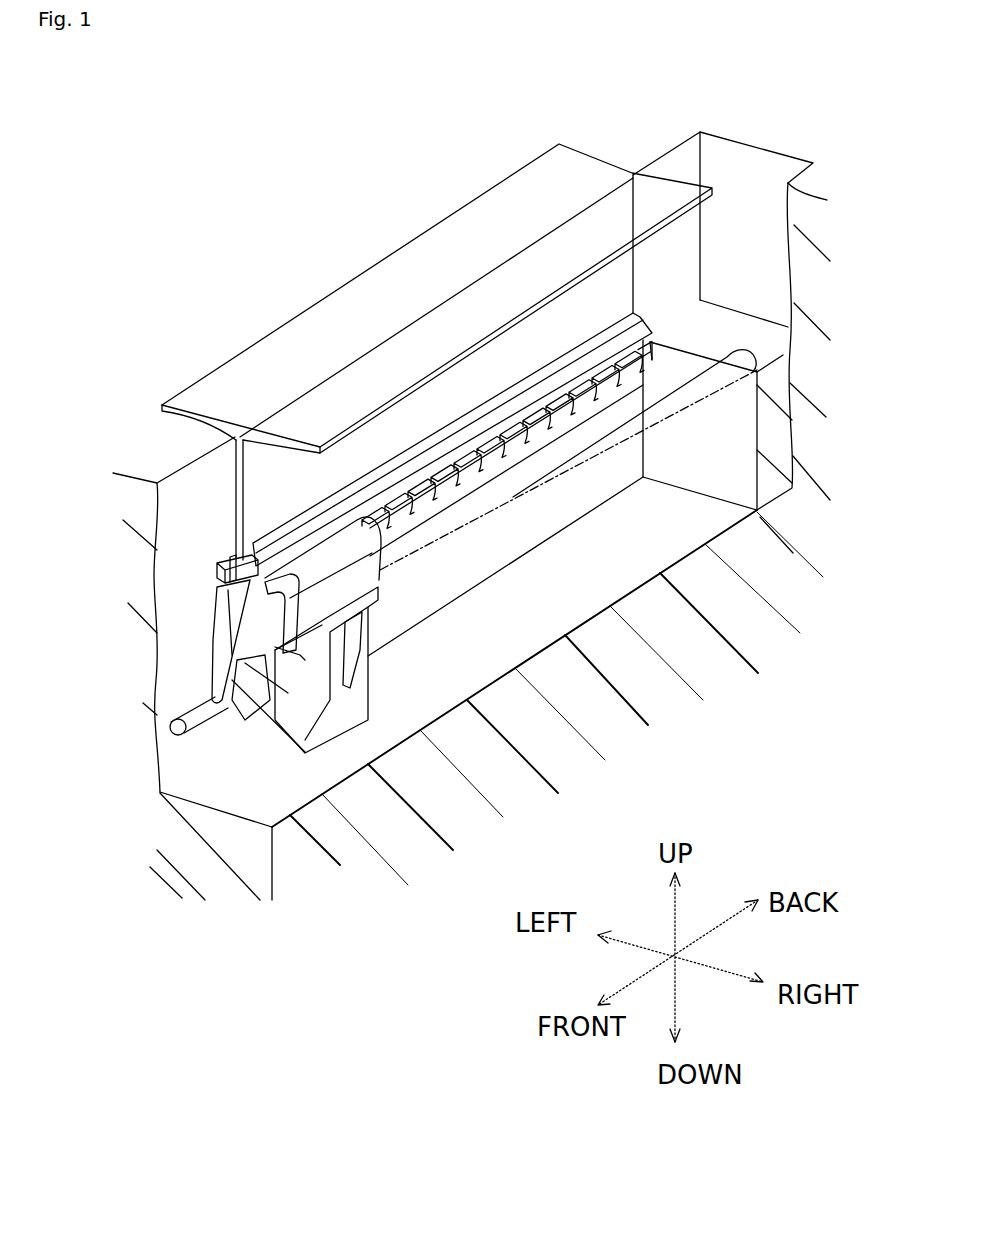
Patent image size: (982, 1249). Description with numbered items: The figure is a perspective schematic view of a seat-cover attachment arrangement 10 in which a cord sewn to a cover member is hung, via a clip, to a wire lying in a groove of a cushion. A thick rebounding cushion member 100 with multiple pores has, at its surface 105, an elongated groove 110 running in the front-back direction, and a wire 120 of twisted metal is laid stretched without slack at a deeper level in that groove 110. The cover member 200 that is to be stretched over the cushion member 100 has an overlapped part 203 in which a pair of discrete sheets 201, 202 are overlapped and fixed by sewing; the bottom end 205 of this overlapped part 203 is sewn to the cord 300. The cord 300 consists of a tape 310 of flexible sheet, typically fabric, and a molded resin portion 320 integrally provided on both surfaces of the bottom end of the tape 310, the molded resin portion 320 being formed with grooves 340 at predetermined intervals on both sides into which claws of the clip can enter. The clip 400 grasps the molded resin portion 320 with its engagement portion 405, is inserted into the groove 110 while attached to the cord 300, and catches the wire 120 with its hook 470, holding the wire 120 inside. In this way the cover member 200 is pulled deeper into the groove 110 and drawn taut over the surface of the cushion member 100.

The fixing structure 10 is at (178, 146).
The cushion member 100 is at (115, 474).
The surface 105 is at (810, 184).
The groove 110 is at (728, 160).
The wire 120 is at (700, 397).
The cover member 200 is at (393, 362).
The sheet 201 is at (672, 186).
The sheet 202 is at (538, 182).
The overlapped part 203 is at (233, 487).
The bottom end 205 is at (217, 570).
The cord 300 is at (149, 602).
The tape 310 is at (233, 550).
The molded resin portion 320 is at (227, 607).
The grooves 340 is at (652, 343).
The clip 400 is at (400, 744).
The engagement portion 405 is at (360, 578).
The hook 470 is at (237, 730).